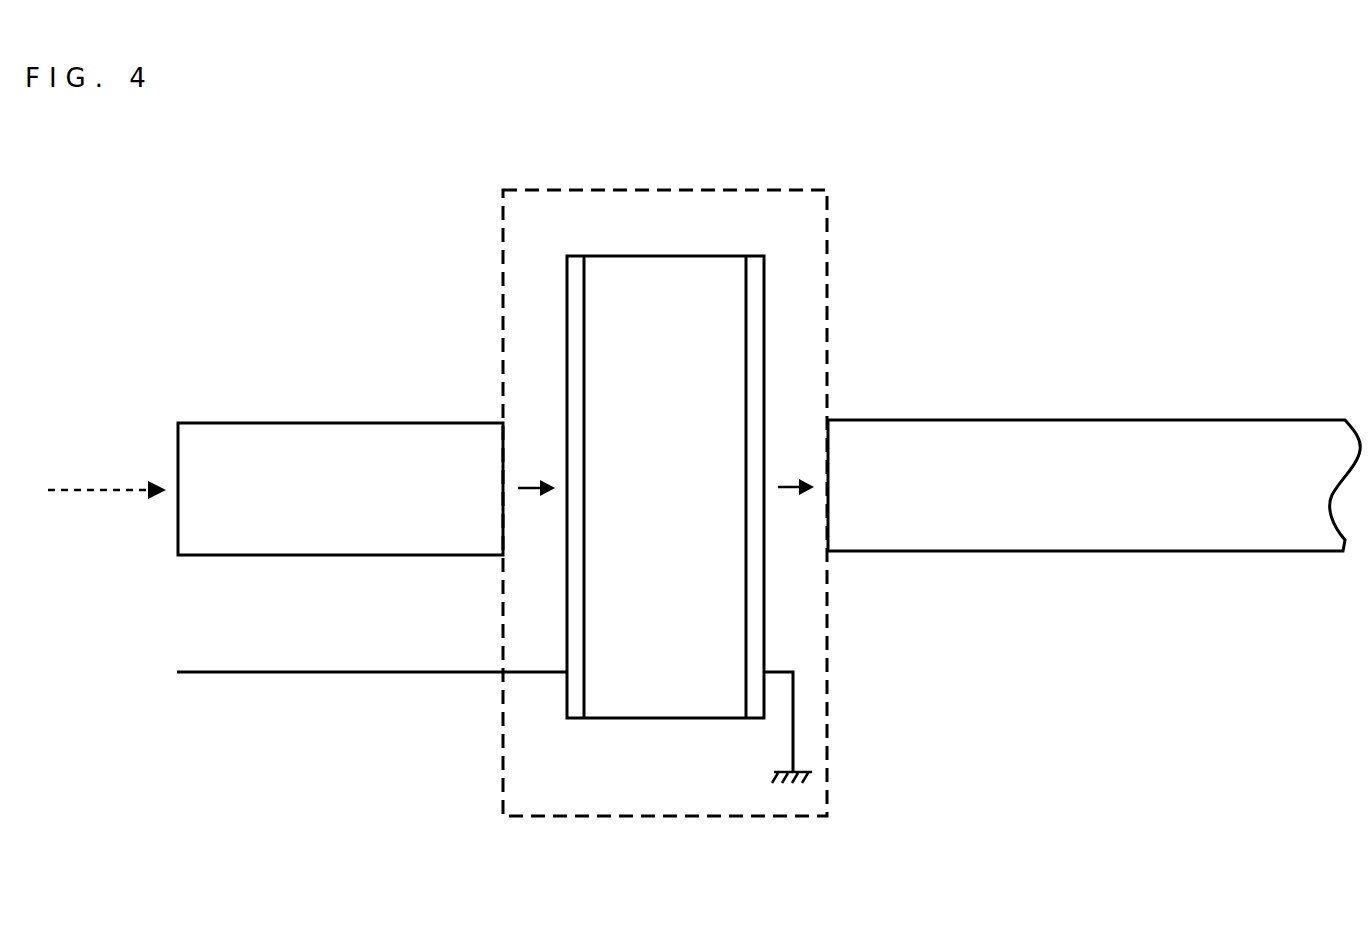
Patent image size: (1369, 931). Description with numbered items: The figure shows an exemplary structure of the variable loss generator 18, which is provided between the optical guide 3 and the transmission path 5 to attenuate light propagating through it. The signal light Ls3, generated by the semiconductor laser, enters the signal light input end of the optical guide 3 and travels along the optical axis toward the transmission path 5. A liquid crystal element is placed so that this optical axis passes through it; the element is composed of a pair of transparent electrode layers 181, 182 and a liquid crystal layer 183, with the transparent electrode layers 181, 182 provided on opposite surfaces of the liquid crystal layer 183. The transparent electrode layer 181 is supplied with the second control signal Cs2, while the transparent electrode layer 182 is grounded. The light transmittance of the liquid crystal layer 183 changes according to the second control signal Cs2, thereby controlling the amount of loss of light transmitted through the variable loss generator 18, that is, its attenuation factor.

The variable loss generator 18 is at (664, 188).
The transparent electrode layer 181 is at (572, 718).
The transparent electrode layer 182 is at (748, 718).
The liquid crystal layer 183 is at (658, 718).
The optical guide 3 is at (345, 423).
The transmission path 5 is at (1086, 420).
The signal light Ls3 is at (107, 478).
The second control signal Cs2 is at (494, 711).